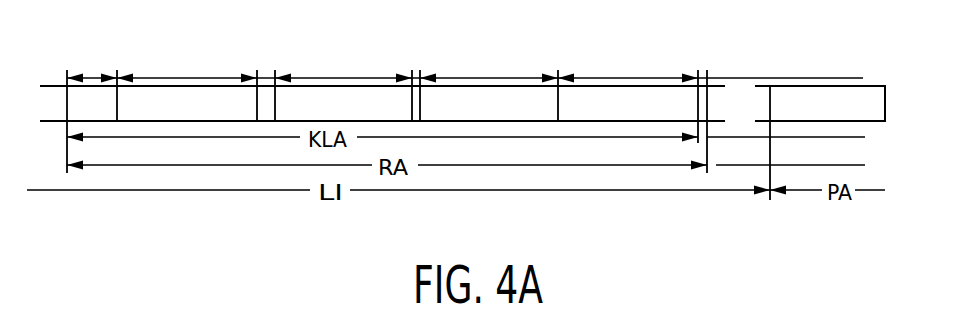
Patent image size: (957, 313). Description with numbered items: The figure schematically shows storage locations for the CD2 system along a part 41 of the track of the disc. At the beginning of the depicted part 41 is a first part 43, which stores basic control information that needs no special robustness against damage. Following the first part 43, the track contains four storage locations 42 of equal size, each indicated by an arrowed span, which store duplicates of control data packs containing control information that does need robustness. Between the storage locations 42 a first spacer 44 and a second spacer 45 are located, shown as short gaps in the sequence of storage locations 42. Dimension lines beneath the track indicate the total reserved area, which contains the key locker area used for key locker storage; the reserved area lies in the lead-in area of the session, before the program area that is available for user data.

The part of the track 41 is at (50, 102).
The storage locations 42 is at (622, 77).
The first part 43 is at (92, 77).
The first spacer 44 is at (265, 121).
The second spacer 45 is at (420, 121).